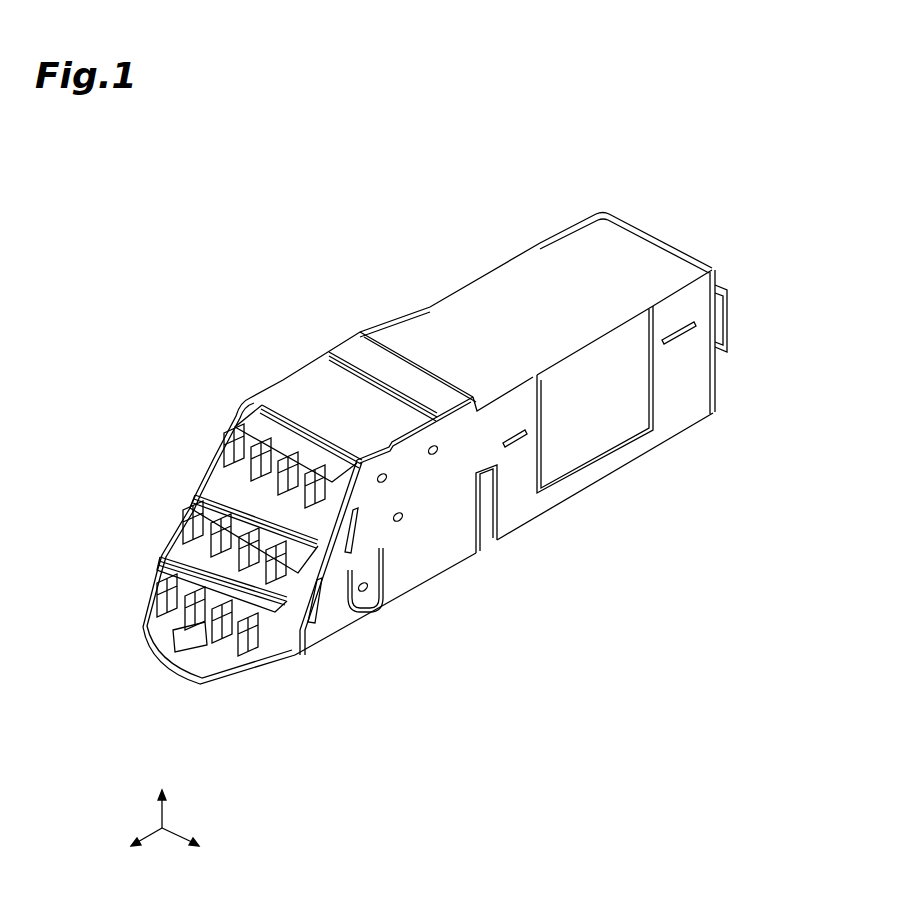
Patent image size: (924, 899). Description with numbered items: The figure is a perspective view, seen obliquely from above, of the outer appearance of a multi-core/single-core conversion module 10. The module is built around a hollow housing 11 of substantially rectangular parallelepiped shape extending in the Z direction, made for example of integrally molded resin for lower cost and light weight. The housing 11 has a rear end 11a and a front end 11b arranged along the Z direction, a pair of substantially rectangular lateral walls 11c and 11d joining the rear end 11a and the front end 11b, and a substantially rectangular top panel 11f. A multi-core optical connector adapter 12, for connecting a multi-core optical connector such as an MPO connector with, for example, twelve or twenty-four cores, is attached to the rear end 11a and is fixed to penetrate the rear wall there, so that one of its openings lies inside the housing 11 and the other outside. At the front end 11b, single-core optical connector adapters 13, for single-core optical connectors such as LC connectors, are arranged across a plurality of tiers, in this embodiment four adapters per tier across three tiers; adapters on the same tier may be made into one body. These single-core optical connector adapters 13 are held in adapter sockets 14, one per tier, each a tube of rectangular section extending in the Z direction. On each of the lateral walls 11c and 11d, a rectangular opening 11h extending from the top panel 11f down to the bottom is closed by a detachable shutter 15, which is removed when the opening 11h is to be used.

The multi-core/single-core conversion module 10 is at (665, 157).
The housing 11 is at (526, 248).
The rear end 11a is at (720, 372).
The front end 11b is at (134, 553).
The lateral wall 11c is at (676, 428).
The lateral wall 11d is at (398, 318).
The top panel 11f is at (488, 302).
The opening 11h is at (539, 467).
The multi-core optical connector adapter 12 is at (725, 312).
The single-core optical connector adapter 13 is at (217, 478).
The adapter socket 14 is at (311, 390).
The shutter 15 is at (597, 446).